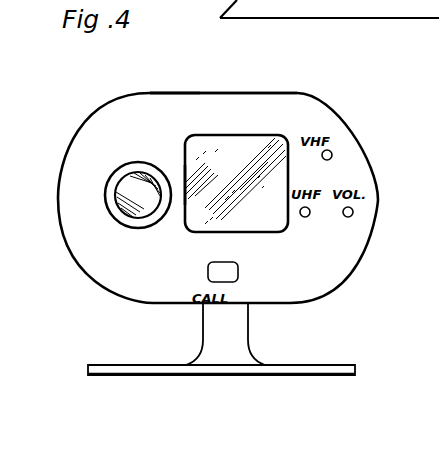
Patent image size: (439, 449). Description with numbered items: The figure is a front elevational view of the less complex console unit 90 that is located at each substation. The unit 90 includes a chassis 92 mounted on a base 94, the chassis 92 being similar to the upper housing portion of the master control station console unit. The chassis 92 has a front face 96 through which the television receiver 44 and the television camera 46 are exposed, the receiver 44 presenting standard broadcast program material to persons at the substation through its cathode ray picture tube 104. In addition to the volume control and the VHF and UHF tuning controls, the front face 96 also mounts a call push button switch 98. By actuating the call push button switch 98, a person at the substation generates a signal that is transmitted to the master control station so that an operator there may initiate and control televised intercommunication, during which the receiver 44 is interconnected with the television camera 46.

The console unit 90 is at (74, 122).
The chassis 92 is at (147, 93).
The front face 96 is at (191, 112).
The television receiver 44 is at (259, 146).
The television camera 46 is at (113, 195).
The cathode ray picture tube 104 is at (197, 208).
The call push button switch 98 is at (238, 272).
The base 94 is at (320, 363).